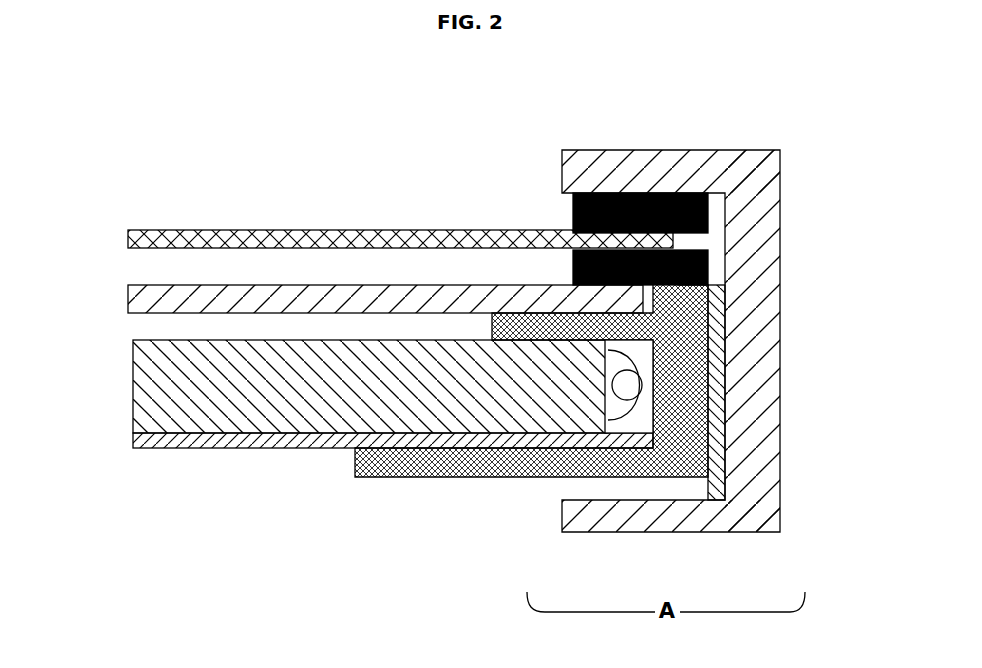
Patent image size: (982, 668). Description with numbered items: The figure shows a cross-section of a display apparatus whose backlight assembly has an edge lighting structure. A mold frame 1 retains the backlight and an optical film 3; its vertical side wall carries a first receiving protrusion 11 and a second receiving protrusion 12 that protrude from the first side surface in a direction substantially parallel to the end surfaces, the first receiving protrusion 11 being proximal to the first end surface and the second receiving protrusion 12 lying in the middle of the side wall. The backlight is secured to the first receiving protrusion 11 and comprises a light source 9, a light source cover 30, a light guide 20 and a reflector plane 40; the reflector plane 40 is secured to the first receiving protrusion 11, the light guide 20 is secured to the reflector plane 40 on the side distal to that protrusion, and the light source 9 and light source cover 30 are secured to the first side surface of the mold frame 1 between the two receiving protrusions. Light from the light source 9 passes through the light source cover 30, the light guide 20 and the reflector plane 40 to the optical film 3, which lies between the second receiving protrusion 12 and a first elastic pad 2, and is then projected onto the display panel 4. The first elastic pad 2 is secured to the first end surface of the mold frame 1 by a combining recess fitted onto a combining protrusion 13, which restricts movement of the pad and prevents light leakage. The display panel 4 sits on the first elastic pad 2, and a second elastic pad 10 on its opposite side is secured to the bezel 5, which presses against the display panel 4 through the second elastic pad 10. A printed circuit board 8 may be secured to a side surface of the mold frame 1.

The mold frame 1 is at (700, 378).
The first elastic pad 2 is at (710, 262).
The optical film 3 is at (128, 290).
The display panel 4 is at (143, 230).
The bezel 5 is at (753, 340).
The printed circuit board 8 is at (727, 433).
The light source 9 is at (630, 425).
The second elastic pad 10 is at (675, 302).
The first receiving protrusion 11 is at (420, 472).
The second receiving protrusion 12 is at (512, 325).
The combining protrusion 13 is at (572, 185).
The light guide 20 is at (558, 410).
The light source cover 30 is at (622, 380).
The reflector plane 40 is at (498, 437).